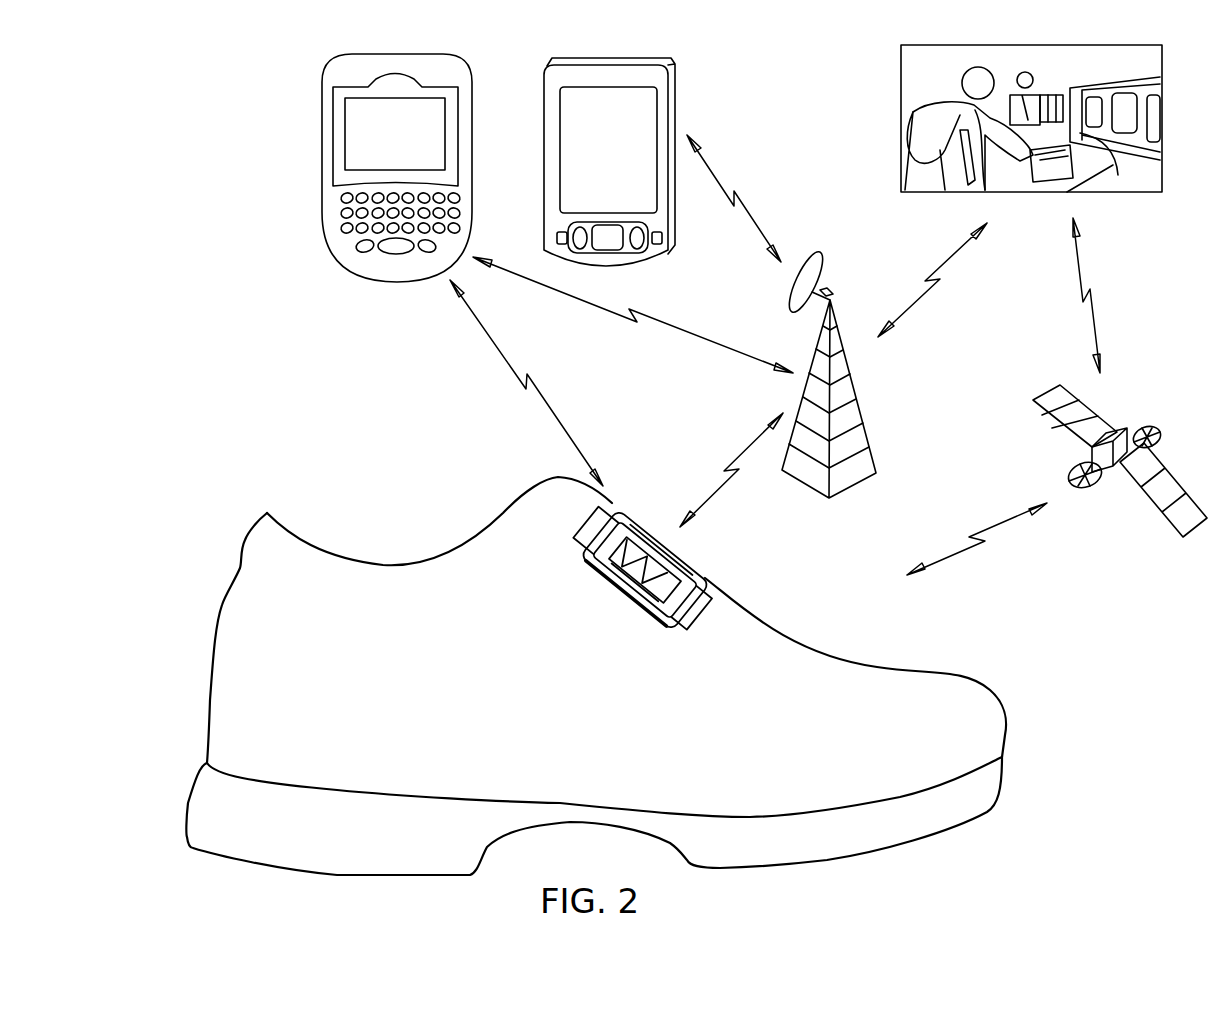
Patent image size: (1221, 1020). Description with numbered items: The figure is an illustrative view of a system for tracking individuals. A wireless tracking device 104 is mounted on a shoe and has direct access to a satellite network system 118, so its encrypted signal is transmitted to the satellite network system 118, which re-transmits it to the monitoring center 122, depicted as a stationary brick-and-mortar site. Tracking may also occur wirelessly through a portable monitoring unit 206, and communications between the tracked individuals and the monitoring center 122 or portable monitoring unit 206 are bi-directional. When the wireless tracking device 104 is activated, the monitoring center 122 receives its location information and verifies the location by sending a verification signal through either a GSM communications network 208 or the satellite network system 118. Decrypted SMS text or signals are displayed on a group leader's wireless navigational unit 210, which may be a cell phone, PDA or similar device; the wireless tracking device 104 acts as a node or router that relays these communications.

The wireless tracking device 104 is at (707, 577).
The satellite network system 118 is at (1123, 482).
The monitoring center 122 is at (1160, 152).
The portable monitoring unit 206 is at (678, 67).
The GSM communications network 208 is at (817, 337).
The wireless navigational unit 210 is at (330, 80).